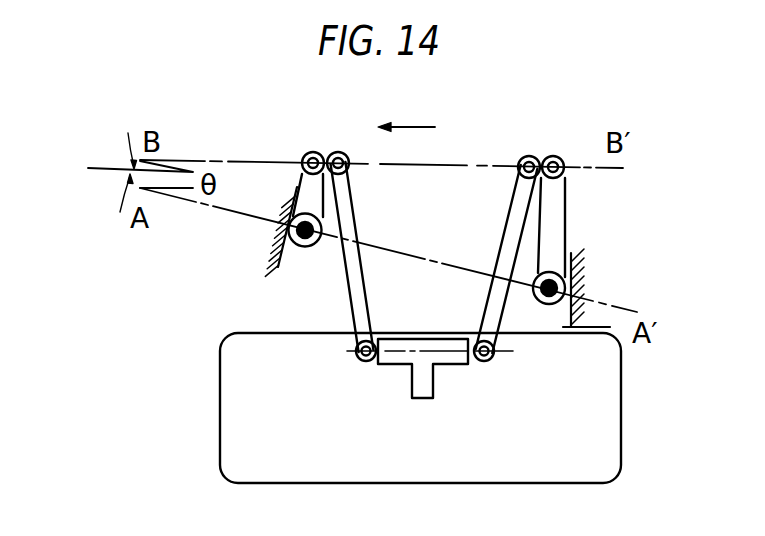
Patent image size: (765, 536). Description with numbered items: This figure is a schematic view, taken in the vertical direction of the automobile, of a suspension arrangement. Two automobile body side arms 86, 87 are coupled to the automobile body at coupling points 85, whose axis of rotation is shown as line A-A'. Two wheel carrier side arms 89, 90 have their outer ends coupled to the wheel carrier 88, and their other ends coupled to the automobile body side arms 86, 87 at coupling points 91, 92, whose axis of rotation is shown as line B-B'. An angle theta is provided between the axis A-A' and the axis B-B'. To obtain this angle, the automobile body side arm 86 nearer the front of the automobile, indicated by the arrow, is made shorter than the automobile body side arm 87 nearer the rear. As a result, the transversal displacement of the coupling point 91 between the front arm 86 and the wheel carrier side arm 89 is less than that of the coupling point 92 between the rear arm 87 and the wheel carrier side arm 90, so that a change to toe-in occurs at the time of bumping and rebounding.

The coupling points 85 is at (276, 213).
The automobile body side arm 86 is at (307, 187).
The automobile body side arm 87 is at (560, 237).
The wheel carrier 88 is at (420, 345).
The wheel carrier side arm 89 is at (355, 278).
The wheel carrier side arm 90 is at (517, 205).
The coupling point 91 is at (326, 150).
The coupling point 92 is at (549, 150).